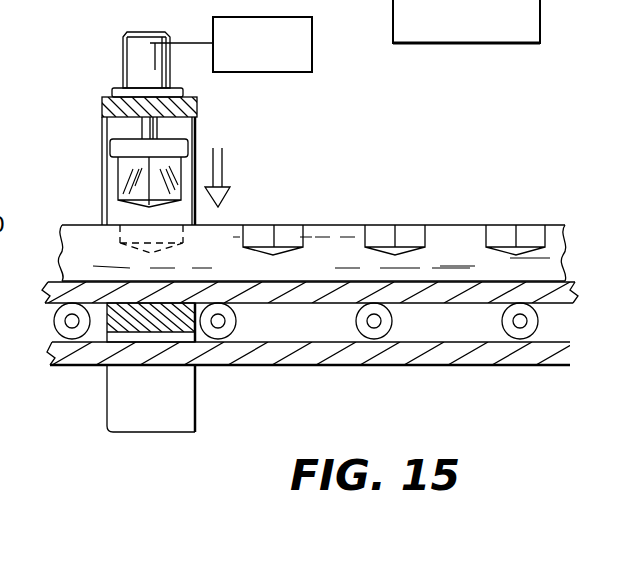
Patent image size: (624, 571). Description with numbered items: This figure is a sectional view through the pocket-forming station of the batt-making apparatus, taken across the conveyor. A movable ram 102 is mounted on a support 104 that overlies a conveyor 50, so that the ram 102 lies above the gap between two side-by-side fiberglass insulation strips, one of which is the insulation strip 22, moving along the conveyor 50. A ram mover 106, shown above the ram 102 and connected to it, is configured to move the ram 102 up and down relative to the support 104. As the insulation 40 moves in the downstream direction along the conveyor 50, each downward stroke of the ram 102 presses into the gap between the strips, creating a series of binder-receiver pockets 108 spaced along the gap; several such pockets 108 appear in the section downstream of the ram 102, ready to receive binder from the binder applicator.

The fiberglass insulation strip 22 is at (108, 237).
The insulation 40 is at (342, 238).
The conveyor 50 is at (305, 378).
The movable ram 102 is at (98, 164).
The support 104 is at (201, 108).
The ram mover 106 is at (288, 72).
The binder-receiver pockets 108 is at (262, 220).